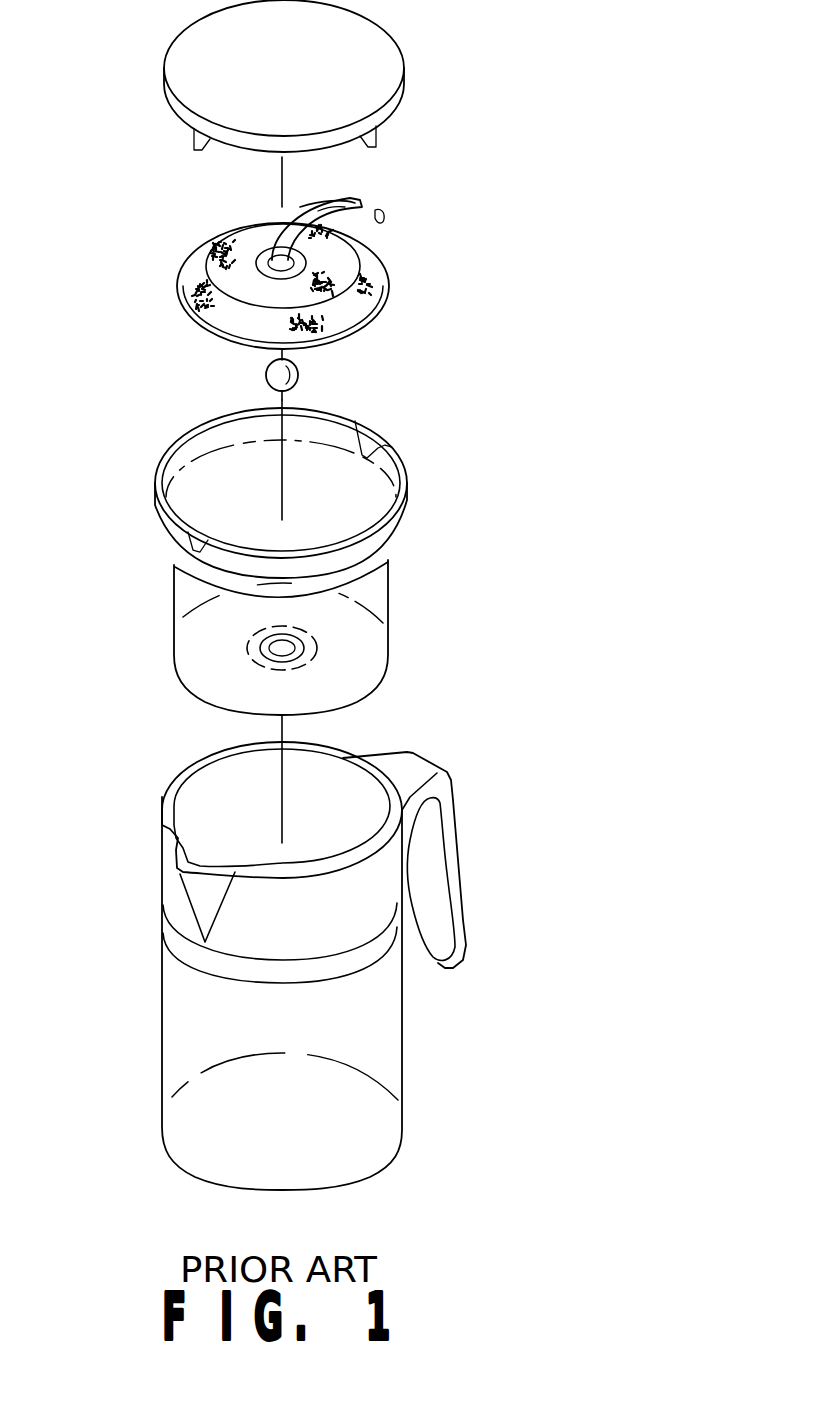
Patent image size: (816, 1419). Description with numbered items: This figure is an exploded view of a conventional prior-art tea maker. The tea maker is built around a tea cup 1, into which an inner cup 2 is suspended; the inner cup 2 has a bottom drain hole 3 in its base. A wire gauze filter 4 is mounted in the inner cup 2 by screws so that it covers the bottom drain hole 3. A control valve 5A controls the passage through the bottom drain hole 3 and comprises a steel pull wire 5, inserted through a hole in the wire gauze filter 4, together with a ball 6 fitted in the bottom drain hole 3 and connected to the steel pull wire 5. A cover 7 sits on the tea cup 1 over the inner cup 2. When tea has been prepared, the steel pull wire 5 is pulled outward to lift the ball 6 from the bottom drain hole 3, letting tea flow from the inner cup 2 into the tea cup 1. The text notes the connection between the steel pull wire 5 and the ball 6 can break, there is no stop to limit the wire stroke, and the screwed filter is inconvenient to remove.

The tea cup 1 is at (380, 1037).
The inner cup 2 is at (377, 587).
The bottom drain hole 3 is at (273, 655).
The wire gauze filter 4 is at (183, 287).
The steel pull wire 5 is at (367, 202).
The control valve 5A is at (273, 227).
The ball 6 is at (300, 368).
The cover 7 is at (378, 50).